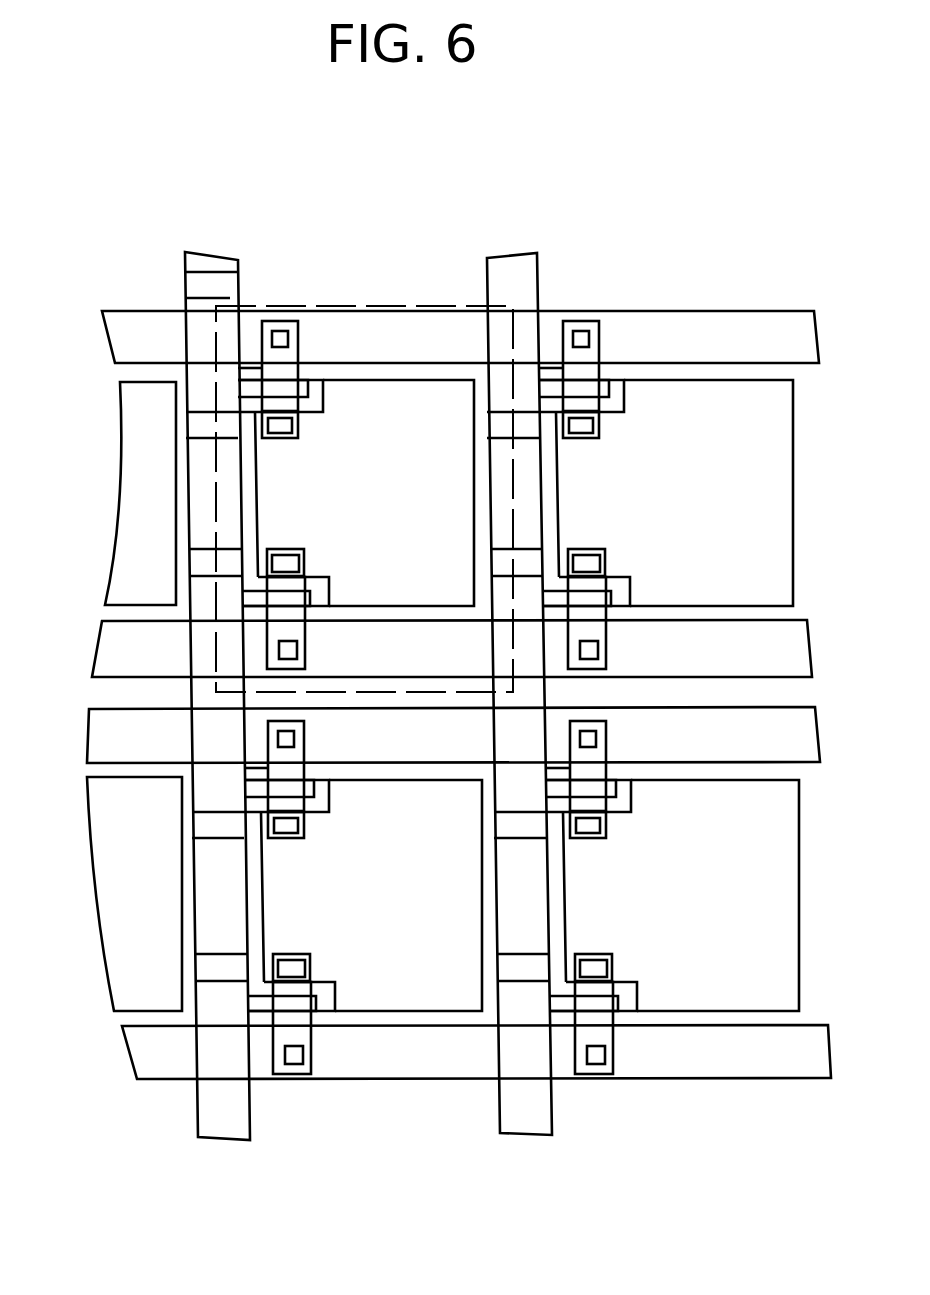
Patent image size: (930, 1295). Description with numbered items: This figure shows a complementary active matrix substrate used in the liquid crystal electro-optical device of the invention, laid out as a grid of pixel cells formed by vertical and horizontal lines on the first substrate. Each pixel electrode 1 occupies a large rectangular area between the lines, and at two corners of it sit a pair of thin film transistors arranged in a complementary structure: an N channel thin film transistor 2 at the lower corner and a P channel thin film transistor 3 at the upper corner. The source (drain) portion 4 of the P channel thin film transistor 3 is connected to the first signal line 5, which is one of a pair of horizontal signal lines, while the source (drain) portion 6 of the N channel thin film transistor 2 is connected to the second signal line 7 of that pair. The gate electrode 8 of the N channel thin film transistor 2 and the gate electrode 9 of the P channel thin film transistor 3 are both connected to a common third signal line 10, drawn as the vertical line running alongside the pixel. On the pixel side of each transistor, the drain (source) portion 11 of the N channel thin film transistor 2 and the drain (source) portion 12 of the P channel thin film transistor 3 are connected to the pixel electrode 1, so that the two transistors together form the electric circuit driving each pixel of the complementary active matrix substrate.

The pixel electrode 1 is at (428, 380).
The N channel thin film transistor 2 is at (299, 592).
The P channel thin film transistor 3 is at (297, 401).
The source (drain) portion 4 is at (290, 373).
The first signal line 5 is at (130, 322).
The source (drain) portion 6 is at (297, 615).
The second signal line 7 is at (102, 647).
The gate electrode 8 is at (297, 600).
The gate electrode 9 is at (290, 392).
The third signal line 10 is at (222, 264).
The drain (source) portion 11 is at (295, 580).
The drain (source) portion 12 is at (372, 392).